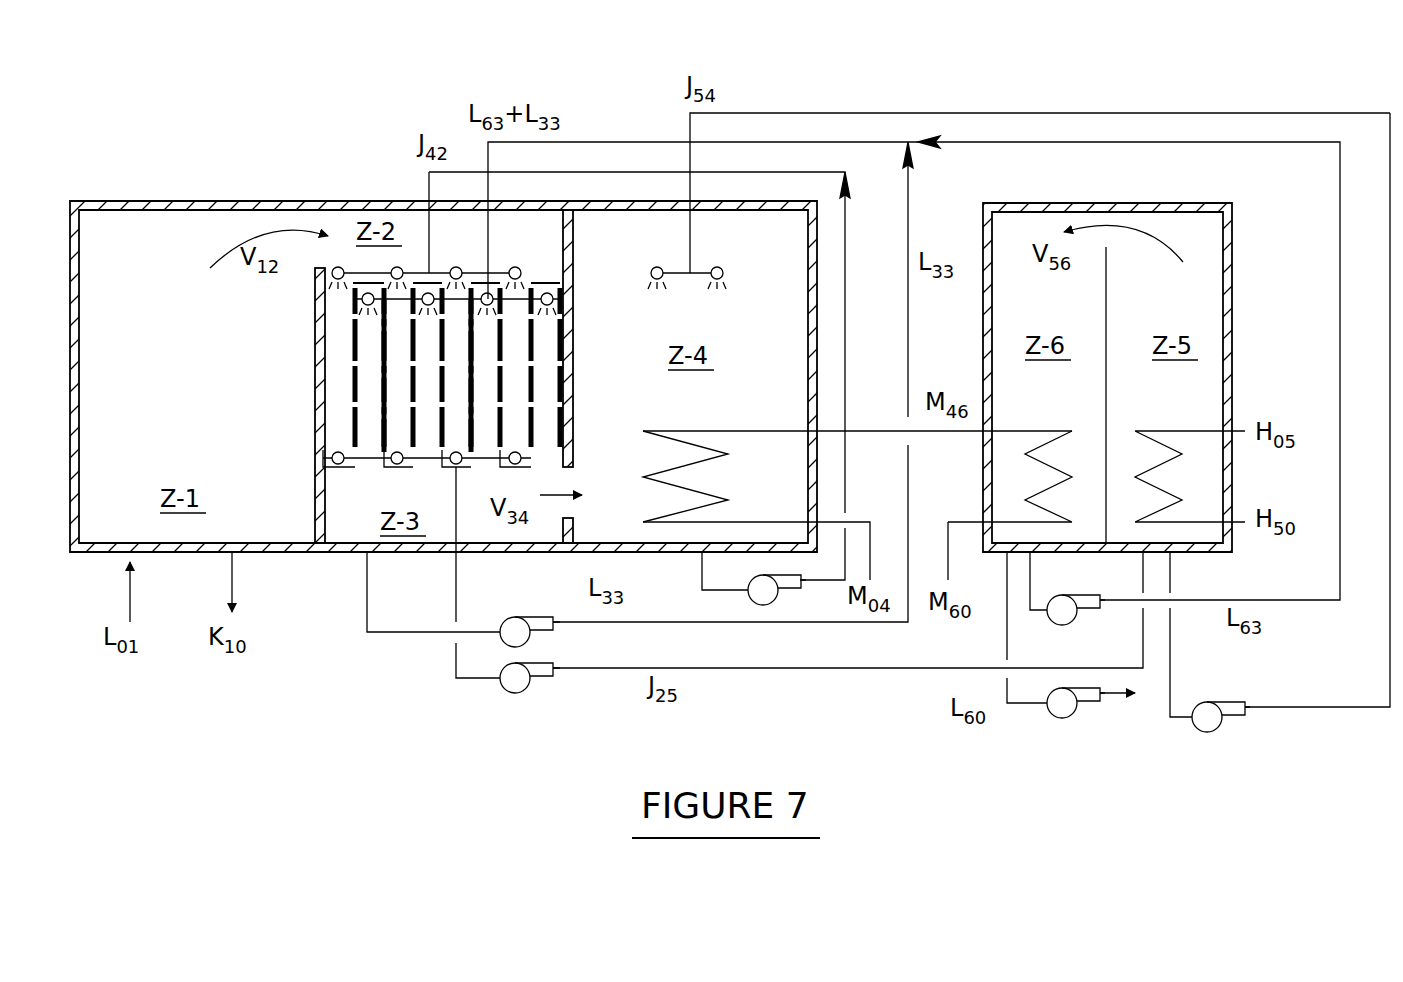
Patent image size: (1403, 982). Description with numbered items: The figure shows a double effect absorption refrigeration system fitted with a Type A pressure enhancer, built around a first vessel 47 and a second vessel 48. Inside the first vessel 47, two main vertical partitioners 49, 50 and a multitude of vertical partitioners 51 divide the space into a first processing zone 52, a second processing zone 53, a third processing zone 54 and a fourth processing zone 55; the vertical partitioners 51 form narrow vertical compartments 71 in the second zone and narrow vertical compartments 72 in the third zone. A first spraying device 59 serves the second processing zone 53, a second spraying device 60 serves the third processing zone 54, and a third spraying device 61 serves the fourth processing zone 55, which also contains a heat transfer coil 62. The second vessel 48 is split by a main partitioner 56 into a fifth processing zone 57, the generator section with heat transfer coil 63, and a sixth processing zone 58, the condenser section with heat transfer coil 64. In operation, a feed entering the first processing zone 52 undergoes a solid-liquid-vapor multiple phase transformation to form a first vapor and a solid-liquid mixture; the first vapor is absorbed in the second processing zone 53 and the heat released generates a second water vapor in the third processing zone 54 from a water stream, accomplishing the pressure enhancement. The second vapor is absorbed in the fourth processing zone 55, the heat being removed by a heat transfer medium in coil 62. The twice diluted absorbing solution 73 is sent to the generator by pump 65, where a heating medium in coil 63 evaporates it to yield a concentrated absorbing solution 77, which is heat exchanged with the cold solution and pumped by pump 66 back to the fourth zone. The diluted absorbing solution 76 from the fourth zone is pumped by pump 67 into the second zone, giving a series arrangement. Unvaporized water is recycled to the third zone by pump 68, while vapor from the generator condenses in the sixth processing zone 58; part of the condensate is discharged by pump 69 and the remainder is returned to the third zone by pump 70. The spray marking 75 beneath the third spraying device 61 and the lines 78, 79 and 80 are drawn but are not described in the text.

The first vessel 47 is at (116, 201).
The second vessel 48 is at (1168, 203).
The main vertical partitioner 49 is at (336, 464).
The main vertical partitioner 50 is at (574, 400).
The vertical partitioners 51 is at (356, 388).
The first processing zone 52 is at (202, 434).
The second processing zone 53 is at (546, 244).
The third processing zone 54 is at (364, 506).
The fourth processing zone 55 is at (702, 408).
The main partitioner 56 is at (1110, 290).
The fifth processing zone 57 is at (1190, 398).
The sixth processing zone 58 is at (1064, 398).
The first spraying device 59 is at (458, 266).
The second spraying device 60 is at (358, 304).
The third spraying device 61 is at (725, 267).
The heat transfer coil 62 is at (716, 464).
The heat transfer coil 63 is at (1160, 468).
The heat transfer coil 64 is at (1046, 466).
The pump 65 is at (510, 676).
The pump 66 is at (1206, 716).
The pump 67 is at (766, 592).
The pump 68 is at (527, 636).
The pump 69 is at (1062, 702).
The pump 70 is at (1062, 608).
The narrow vertical compartments 71 is at (396, 353).
The narrow vertical compartments 72 is at (480, 335).
The diluted absorbing solution 73 is at (478, 572).
The spray 75 is at (724, 288).
The diluted absorbing solution 76 is at (705, 571).
The concentrated absorbing solution 77 is at (1317, 410).
The drain line 78 is at (433, 592).
The drain line 79 is at (1027, 627).
The drain line 80 is at (1032, 590).